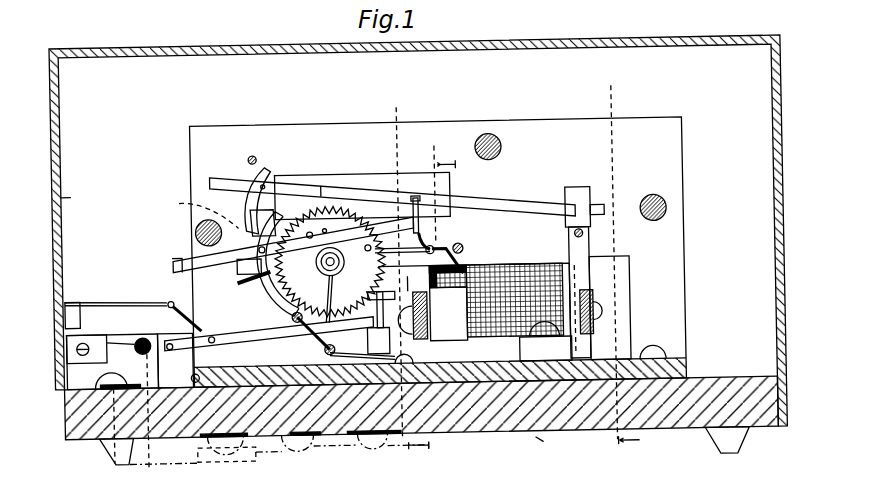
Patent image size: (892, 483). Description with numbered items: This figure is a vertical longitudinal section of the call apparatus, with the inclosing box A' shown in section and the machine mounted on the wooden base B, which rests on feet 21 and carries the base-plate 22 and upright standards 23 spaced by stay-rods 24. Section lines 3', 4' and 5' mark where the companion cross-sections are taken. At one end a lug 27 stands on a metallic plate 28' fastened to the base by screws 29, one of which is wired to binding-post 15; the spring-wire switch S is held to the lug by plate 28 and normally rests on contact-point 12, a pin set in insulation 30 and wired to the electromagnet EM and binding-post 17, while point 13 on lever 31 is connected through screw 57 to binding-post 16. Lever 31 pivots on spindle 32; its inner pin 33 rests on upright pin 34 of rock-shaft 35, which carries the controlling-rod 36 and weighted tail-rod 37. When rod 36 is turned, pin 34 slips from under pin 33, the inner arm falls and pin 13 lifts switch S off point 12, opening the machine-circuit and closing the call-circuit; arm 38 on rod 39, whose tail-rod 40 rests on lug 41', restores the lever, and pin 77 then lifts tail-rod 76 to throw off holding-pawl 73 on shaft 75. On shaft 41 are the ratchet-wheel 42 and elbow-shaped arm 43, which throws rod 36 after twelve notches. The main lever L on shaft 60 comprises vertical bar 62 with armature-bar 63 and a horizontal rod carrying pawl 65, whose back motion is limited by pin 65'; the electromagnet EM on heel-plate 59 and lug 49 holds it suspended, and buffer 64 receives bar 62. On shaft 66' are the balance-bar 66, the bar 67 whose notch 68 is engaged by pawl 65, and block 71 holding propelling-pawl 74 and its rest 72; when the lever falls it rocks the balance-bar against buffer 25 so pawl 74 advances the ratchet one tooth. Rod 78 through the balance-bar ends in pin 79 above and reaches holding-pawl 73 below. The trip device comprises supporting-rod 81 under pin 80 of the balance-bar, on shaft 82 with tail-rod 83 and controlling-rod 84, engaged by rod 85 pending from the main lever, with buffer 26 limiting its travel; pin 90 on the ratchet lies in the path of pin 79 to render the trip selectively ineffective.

The inclosing box A' is at (74, 190).
The base B is at (544, 441).
The main propelling or operating lever L is at (528, 189).
The switch S is at (121, 349).
The electromagnet EM is at (476, 276).
The section line 3' 3' is at (621, 269).
The section line 4' 4' is at (445, 196).
The section line 5' 5' is at (408, 279).
The contact-point 12 is at (138, 403).
The point 13 is at (175, 360).
The binding-post 15 is at (218, 460).
The binding-post 16 is at (288, 452).
The binding-post 17 is at (364, 458).
The feet or pedestals 21 is at (424, 447).
The base-plate 22 is at (684, 376).
The upright plates or standards 23 is at (453, 241).
The separators or stay-rods 24 is at (176, 233).
The buffer 25 is at (241, 152).
The buffer 26 is at (458, 257).
The lug or standard 27 is at (89, 382).
The plate 28 is at (62, 350).
The metallic plate 28' is at (398, 408).
The screws 29 is at (58, 392).
The insulation 30 is at (148, 336).
The metallic lever 31 is at (269, 331).
The metallic shaft or spindle 32 is at (208, 346).
The laterally-extending pin 33 is at (315, 346).
The upright pin 34 is at (370, 347).
The rock-shaft 35 is at (358, 361).
The controlling-rod 36 is at (337, 298).
The tail-rod 37 is at (362, 359).
The arm 38 is at (172, 312).
The rod 39 is at (160, 305).
The tail-rod 40 is at (106, 303).
The shaft 41 is at (339, 261).
The lug 41' is at (86, 315).
The ratchet-wheel 42 is at (379, 240).
The arm 43 is at (334, 275).
The lug 49 is at (449, 314).
The screw 57 is at (157, 417).
The heel-plate 59 is at (427, 318).
The shaft 60 is at (580, 245).
The vertical bar 62 is at (610, 300).
The armature-bar 63 is at (590, 308).
The buffer 64 is at (545, 341).
The pawl 65 is at (242, 201).
The pin 65' is at (268, 181).
The balance-bar 66 is at (279, 236).
The shaft 66' is at (299, 220).
The bar 67 is at (252, 257).
The notch 68 is at (198, 210).
The block 71 is at (262, 223).
The rest 72 is at (253, 287).
The holding-pawl 73 is at (284, 305).
The propelling-pawl 74 is at (245, 264).
The shaft 75 is at (287, 324).
The tail-rod 76 is at (290, 345).
The pin 77 is at (379, 340).
The rod 78 is at (330, 262).
The pin 79 is at (335, 225).
The laterally-projecting pin 80 is at (420, 203).
The supporting-rod or trip-rod 81 is at (421, 256).
The shaft 82 is at (417, 279).
The tail-rod 83 is at (457, 259).
The controlling-rod 84 is at (402, 258).
The rod 85 is at (410, 218).
The pin 90 is at (316, 195).